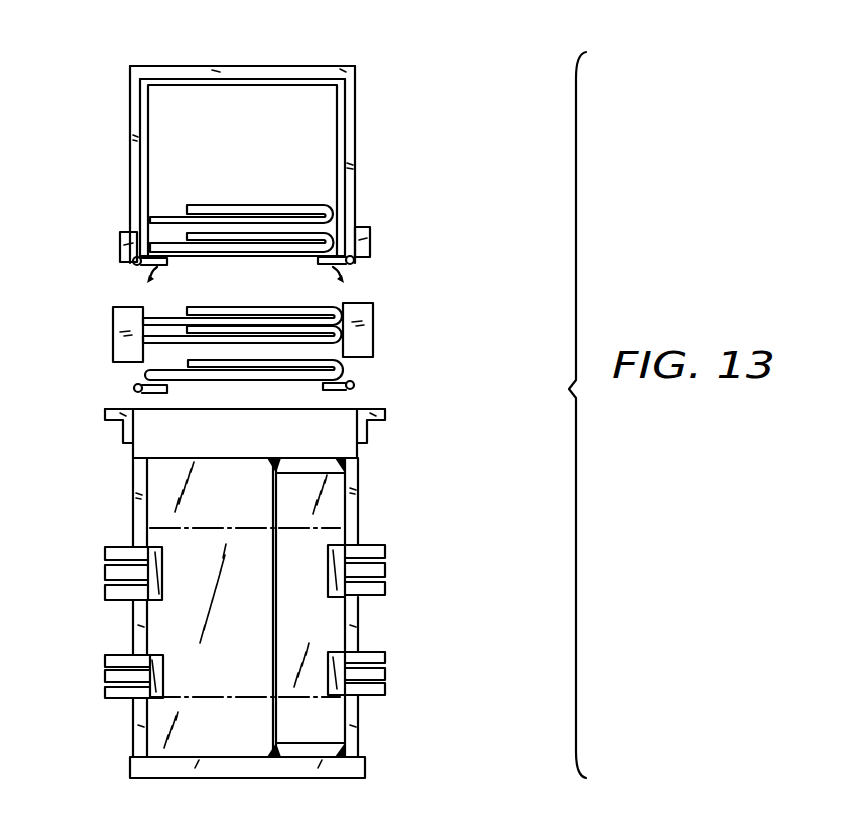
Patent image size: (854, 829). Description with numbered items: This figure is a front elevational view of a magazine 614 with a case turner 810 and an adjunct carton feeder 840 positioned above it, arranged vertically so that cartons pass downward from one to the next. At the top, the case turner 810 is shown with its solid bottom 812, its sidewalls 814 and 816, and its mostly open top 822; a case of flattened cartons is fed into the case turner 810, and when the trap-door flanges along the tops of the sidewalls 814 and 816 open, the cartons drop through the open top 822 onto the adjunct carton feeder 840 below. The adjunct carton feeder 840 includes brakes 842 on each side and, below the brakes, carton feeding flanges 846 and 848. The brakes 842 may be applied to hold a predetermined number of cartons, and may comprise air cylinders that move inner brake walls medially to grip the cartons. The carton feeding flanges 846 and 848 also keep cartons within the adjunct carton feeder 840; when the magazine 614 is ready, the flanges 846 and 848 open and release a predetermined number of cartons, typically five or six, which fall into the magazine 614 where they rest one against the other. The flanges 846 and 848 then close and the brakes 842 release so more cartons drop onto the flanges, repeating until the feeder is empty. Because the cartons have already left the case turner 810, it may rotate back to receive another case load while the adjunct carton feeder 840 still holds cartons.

The case turner 810 is at (256, 148).
The solid bottom 812 is at (242, 46).
The sidewall 814 is at (391, 164).
The sidewall 816 is at (96, 164).
The mostly open top 822 is at (305, 223).
The adjunct carton feeder 840 is at (284, 341).
The brakes 842 is at (255, 332).
The carton feeding flange 846 is at (406, 399).
The carton feeding flange 848 is at (98, 411).
The magazine 614 is at (301, 593).